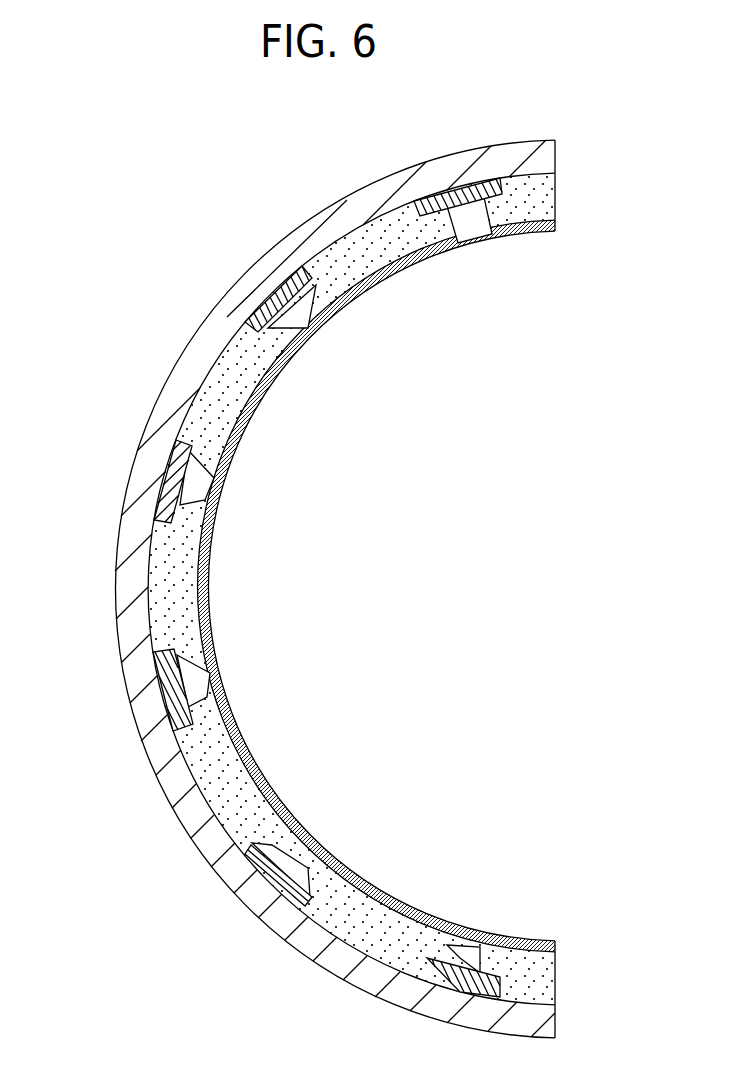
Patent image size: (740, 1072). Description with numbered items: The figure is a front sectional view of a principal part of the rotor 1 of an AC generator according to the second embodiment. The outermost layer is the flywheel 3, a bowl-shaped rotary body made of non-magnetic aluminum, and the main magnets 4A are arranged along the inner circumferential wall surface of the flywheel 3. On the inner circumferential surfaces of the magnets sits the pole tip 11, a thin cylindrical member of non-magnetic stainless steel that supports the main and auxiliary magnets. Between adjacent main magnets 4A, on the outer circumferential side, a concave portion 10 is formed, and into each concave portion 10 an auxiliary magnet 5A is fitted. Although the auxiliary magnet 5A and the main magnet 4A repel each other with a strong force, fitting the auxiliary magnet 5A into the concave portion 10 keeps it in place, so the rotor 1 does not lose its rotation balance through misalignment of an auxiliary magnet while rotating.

The rotor 1 is at (560, 182).
The flywheel 3 is at (387, 190).
The main magnet 4A is at (183, 560).
The auxiliary magnet 5A is at (452, 186).
The concave portion 10 is at (173, 458).
The pole tip 11 is at (502, 233).